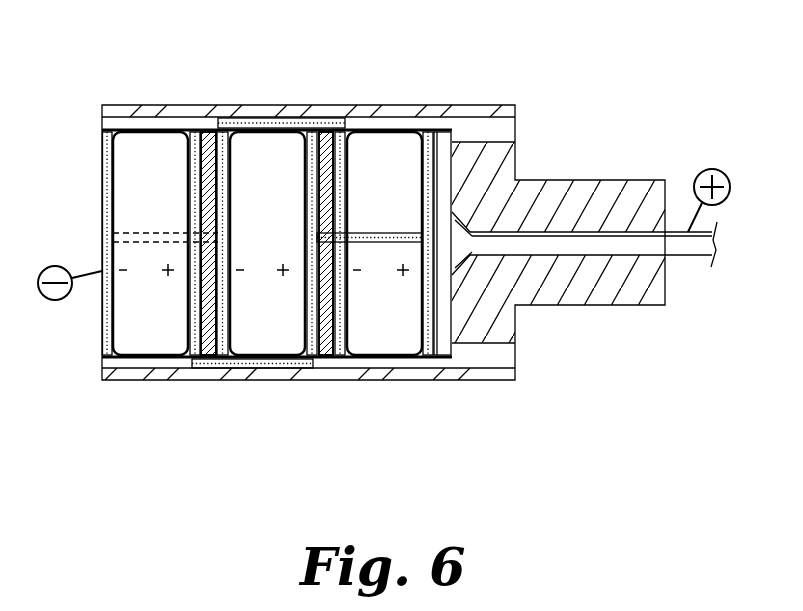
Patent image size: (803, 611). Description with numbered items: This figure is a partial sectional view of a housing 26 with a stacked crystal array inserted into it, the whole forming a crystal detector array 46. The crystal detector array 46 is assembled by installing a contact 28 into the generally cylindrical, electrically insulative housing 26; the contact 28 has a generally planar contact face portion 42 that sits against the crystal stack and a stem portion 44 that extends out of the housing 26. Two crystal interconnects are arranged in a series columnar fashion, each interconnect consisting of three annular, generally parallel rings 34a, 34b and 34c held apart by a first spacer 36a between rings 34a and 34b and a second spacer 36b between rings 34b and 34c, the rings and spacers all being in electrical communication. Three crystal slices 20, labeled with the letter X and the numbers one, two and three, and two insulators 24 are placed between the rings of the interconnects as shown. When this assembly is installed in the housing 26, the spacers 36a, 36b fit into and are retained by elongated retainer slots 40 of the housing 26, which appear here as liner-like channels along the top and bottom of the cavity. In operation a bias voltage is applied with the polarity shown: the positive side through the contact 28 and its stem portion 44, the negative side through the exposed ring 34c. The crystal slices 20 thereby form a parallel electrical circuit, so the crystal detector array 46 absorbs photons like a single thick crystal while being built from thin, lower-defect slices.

The crystal detector array 46 is at (114, 45).
The retainer slots 40 is at (105, 125).
The crystal slices 20 is at (152, 345).
The ring 34c is at (102, 172).
The insulators 24 is at (210, 133).
The ring 34b is at (222, 136).
The first spacer 36a is at (283, 127).
The ring 34a is at (342, 143).
The contact face portion 42 is at (443, 348).
The second spacer 36b is at (140, 233).
The housing 26 is at (516, 152).
The stem portion 44 is at (712, 265).
The contact 28 is at (683, 268).